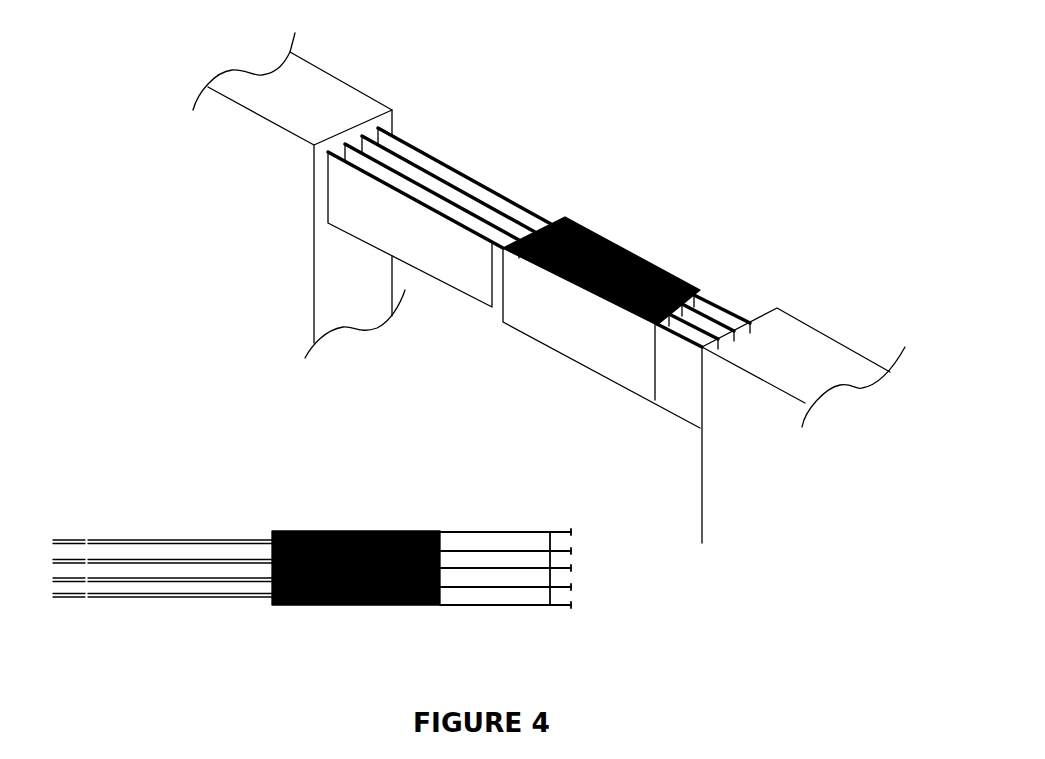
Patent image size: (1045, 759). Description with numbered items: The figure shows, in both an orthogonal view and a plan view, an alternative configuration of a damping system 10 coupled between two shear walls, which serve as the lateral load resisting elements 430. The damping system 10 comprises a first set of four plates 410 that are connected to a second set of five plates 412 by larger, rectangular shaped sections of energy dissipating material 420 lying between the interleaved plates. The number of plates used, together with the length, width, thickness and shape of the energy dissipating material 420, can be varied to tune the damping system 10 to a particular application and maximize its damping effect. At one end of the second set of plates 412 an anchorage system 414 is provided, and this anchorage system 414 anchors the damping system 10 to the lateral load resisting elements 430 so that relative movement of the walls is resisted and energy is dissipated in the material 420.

The damping system 10 is at (653, 225).
The first set of four plates 410 is at (165, 595).
The second set of five plates 412 is at (493, 532).
The anchorage system 414 is at (550, 575).
The energy dissipating material 420 is at (442, 592).
The lateral load resisting elements 430 is at (744, 431).